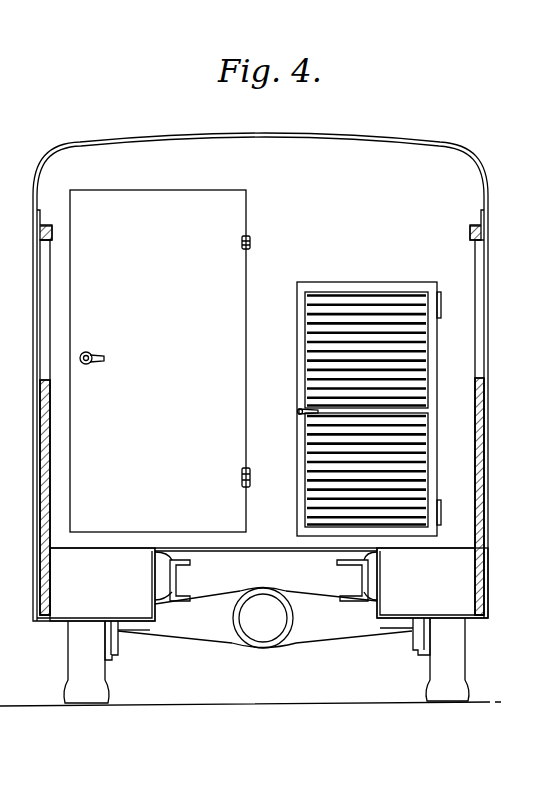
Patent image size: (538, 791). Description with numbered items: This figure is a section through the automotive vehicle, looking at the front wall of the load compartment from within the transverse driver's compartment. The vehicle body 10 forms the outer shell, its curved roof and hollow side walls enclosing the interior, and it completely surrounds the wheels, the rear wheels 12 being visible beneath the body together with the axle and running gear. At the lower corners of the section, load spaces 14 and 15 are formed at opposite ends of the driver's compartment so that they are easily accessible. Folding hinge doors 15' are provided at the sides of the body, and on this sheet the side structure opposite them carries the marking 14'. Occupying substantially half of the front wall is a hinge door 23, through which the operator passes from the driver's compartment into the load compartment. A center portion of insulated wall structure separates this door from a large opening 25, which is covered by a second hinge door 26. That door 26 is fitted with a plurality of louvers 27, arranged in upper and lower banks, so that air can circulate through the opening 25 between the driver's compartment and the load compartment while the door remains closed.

The body 10 is at (124, 140).
The rear wheels 12 is at (97, 680).
The load space 14 is at (91, 609).
The left side wall 14' is at (25, 497).
The load space 15 is at (443, 605).
The folding hinge doors 15' is at (501, 496).
The hinge door 23 is at (164, 338).
The opening 25 is at (421, 282).
The hinge door 26 is at (432, 361).
The louvers 27 is at (450, 447).